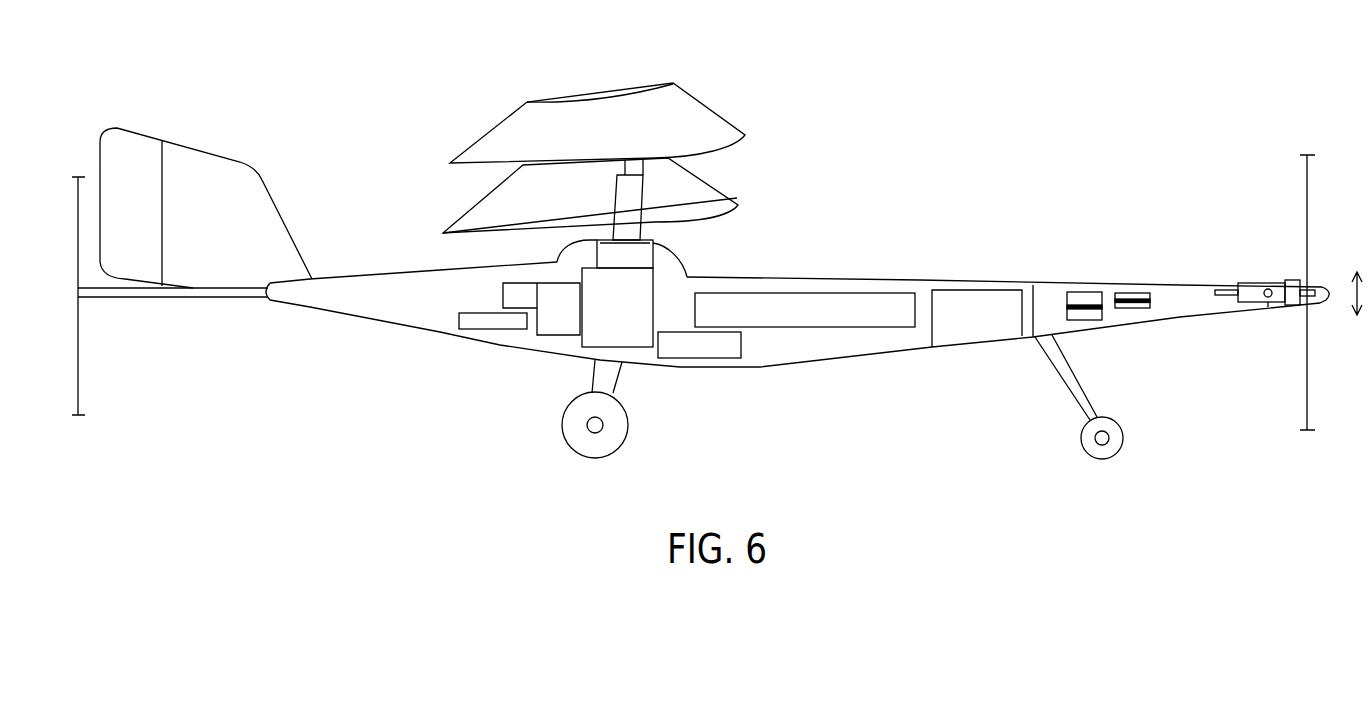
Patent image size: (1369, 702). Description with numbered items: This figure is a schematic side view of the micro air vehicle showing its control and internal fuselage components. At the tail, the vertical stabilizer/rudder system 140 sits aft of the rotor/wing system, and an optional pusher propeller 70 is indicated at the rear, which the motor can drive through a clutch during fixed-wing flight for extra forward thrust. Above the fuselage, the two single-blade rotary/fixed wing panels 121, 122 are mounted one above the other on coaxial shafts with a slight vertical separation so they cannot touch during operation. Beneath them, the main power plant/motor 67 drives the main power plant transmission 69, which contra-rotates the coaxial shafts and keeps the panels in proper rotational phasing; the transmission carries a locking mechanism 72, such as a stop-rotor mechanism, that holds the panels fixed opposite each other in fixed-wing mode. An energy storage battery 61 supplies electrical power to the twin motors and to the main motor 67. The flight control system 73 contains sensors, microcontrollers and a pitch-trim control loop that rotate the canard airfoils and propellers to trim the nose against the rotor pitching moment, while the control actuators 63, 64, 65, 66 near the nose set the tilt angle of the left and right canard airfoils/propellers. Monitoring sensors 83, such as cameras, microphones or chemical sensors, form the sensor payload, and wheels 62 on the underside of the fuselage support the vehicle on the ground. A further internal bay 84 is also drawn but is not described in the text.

The vertical stabilizer/rudder system 140 is at (243, 175).
The pusher propeller 70 is at (78, 357).
The wing panel 122 is at (697, 113).
The wing panel 121 is at (693, 180).
The locking mechanism 72 is at (637, 259).
The main power plant transmission 69 is at (632, 337).
The main power plant/motor 67 is at (555, 327).
The equipment bay 84 is at (473, 322).
The flight control system 73 is at (710, 348).
The energy storage battery 61 is at (815, 303).
The monitoring sensors 83 is at (977, 302).
The control actuator 64 is at (1083, 295).
The control actuator 63 is at (1083, 317).
The control actuator 65 is at (1133, 293).
The control actuator 66 is at (1132, 310).
The wheels 62 is at (572, 430).